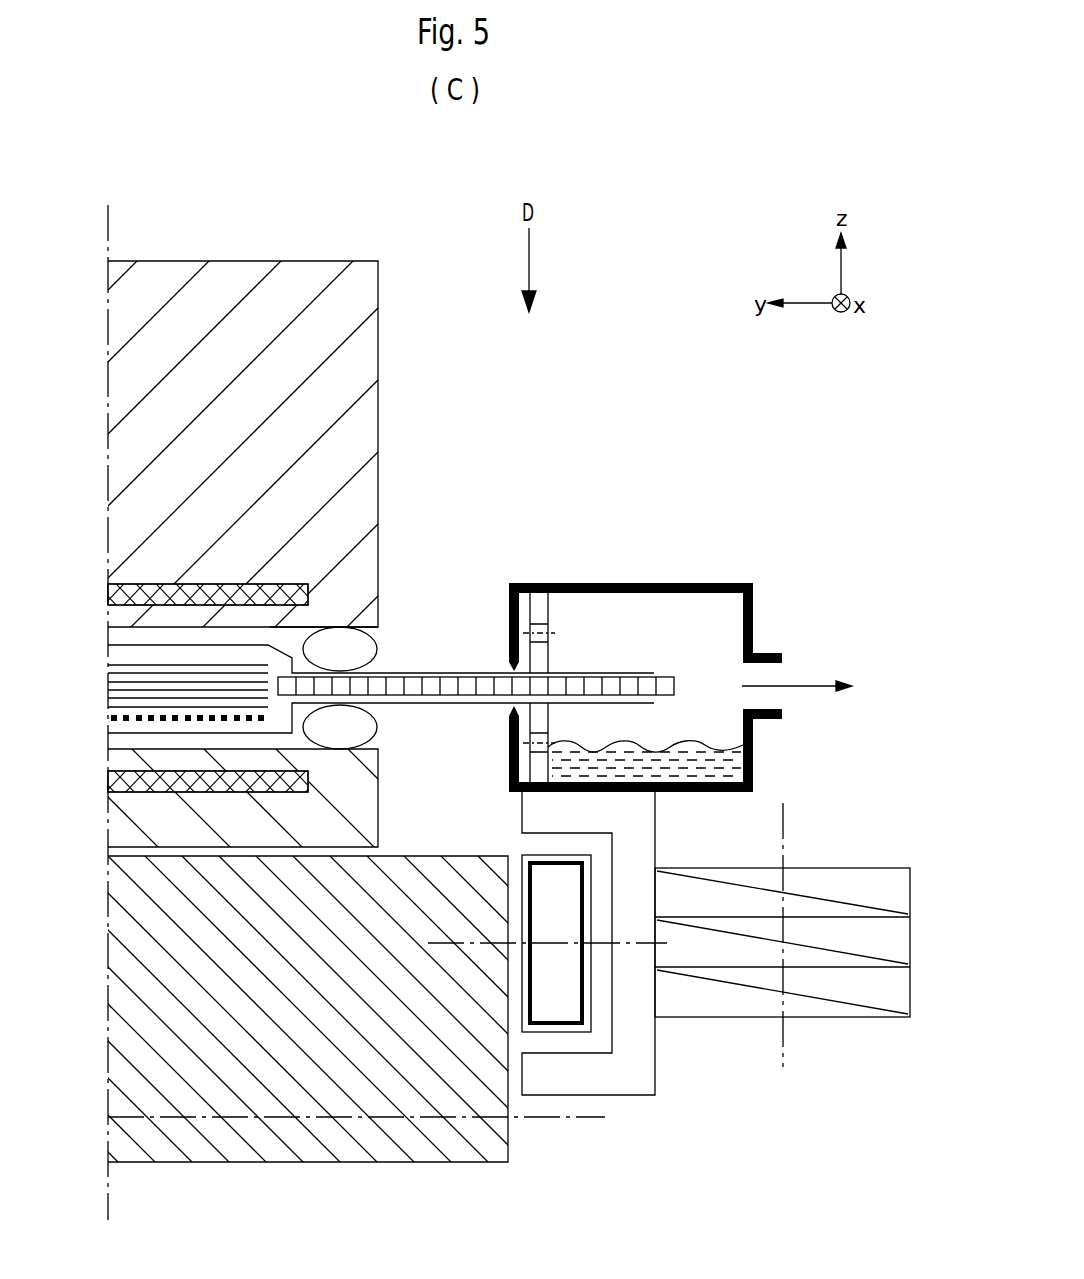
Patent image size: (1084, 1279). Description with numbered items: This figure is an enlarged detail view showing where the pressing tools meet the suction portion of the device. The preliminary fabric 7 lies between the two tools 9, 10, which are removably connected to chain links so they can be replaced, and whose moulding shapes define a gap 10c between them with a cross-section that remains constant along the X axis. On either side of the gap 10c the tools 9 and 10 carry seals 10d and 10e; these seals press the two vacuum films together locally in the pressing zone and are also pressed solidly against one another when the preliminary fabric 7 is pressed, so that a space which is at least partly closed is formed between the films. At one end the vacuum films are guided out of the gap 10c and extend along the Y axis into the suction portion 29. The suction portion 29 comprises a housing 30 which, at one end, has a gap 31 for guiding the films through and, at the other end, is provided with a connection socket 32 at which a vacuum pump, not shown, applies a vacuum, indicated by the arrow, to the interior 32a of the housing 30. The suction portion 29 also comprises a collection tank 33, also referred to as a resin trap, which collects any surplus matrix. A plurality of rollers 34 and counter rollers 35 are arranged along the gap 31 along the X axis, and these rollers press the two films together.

The preliminary fabric 7 is at (118, 687).
The tool 9 is at (364, 428).
The tool 10 is at (368, 799).
The gap 10c is at (288, 639).
The seal 10d is at (363, 648).
The seal 10e is at (363, 727).
The suction portion 29 is at (667, 570).
The housing 30 is at (585, 582).
The gap 31 is at (513, 669).
The connection socket 32 is at (772, 652).
The interior 32a is at (657, 645).
The collection tank 33 is at (690, 765).
The rollers 34 is at (540, 608).
The counter rollers 35 is at (540, 770).